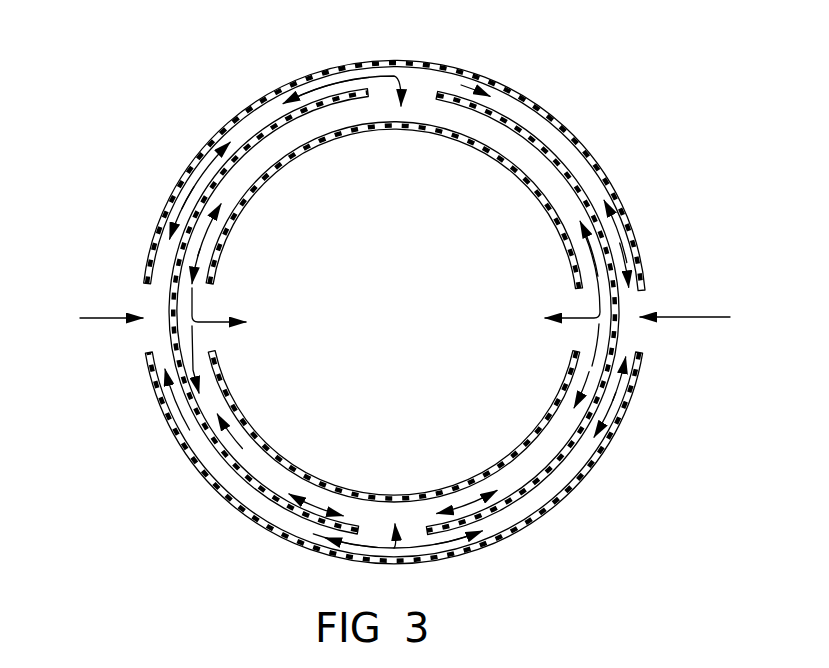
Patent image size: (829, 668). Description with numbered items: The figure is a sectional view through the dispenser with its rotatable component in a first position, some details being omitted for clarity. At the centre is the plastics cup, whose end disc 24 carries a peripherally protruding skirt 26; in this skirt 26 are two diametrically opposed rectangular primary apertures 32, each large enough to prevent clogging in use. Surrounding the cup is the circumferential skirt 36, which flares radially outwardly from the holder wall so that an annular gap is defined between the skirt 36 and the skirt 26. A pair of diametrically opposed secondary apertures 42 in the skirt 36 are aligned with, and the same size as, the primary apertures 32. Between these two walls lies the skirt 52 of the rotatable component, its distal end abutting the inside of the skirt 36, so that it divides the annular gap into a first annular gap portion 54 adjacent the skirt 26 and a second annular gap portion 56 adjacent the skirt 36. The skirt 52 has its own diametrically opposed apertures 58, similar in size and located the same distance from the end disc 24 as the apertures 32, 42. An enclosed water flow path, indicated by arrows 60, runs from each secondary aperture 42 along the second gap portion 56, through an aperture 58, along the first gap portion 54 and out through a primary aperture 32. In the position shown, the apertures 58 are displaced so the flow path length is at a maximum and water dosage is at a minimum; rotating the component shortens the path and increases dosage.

The end disc 24 is at (408, 314).
The skirt 26 is at (380, 502).
The primary apertures 32 is at (218, 339).
The circumferential skirt 36 is at (598, 458).
The secondary apertures 42 is at (138, 333).
The skirt 52 is at (550, 473).
The first annular gap portion 54 is at (223, 440).
The second annular gap portion 56 is at (168, 427).
The apertures 58 is at (424, 80).
The arrows 60 is at (200, 167).